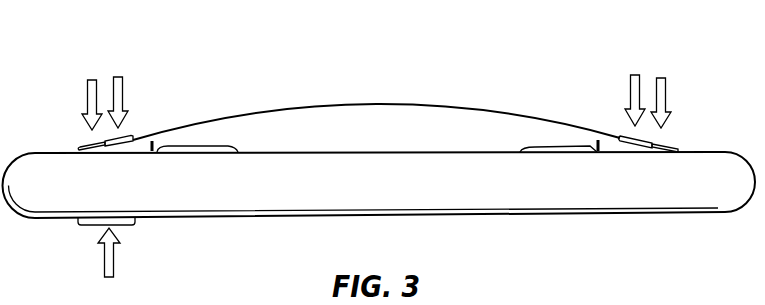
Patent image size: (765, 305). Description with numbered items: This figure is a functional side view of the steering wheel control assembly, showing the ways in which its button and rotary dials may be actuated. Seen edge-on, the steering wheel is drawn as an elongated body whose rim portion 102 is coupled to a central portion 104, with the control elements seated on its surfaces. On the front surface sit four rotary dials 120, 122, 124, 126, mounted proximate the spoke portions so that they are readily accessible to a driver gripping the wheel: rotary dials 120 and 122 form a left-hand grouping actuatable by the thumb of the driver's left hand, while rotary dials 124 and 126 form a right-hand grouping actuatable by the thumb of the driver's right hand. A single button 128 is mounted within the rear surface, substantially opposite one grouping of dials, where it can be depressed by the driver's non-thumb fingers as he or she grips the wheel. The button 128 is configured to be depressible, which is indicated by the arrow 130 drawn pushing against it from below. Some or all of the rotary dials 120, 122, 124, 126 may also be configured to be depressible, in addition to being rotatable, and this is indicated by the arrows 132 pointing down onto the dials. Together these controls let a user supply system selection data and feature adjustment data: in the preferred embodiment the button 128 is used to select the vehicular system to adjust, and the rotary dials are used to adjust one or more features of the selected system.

The rim portion 102 is at (522, 217).
The central portion 104 is at (242, 117).
The rotary dial 120 is at (673, 145).
The rotary dial 122 is at (623, 137).
The rotary dial 124 is at (128, 141).
The rotary dial 126 is at (82, 146).
The button 128 is at (87, 225).
The arrow 130 is at (115, 262).
The arrows 132 is at (90, 79).